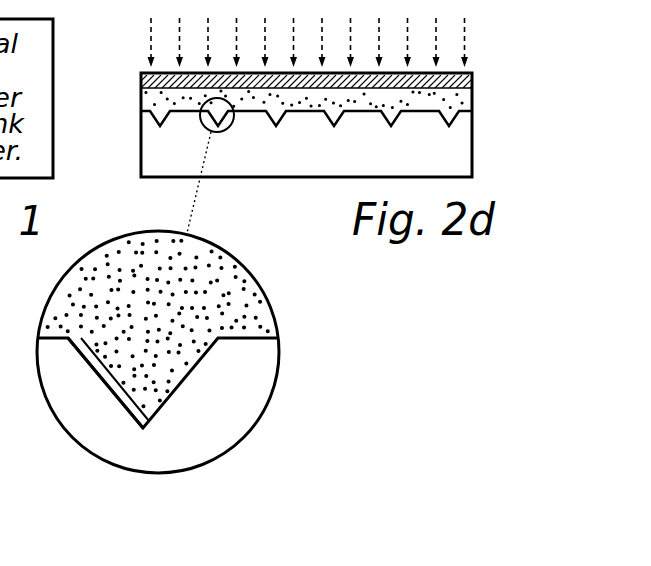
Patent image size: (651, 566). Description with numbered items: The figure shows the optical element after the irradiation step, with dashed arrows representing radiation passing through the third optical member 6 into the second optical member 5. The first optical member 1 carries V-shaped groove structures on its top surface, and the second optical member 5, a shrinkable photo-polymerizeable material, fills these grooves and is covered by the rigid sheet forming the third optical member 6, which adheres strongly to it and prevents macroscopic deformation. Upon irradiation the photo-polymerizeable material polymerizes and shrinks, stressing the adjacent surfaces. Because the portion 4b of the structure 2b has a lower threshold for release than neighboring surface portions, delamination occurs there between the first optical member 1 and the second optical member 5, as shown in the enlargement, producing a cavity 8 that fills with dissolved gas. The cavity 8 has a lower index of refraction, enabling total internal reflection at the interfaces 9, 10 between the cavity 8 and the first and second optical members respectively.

The first optical member 1 is at (473, 143).
The second optical member 5 is at (467, 98).
The third optical member 6 is at (473, 82).
The interface 10 is at (98, 356).
The structure 2b is at (140, 388).
The interface 9 is at (93, 368).
The portion 4b is at (113, 393).
The cavity 8 is at (133, 397).